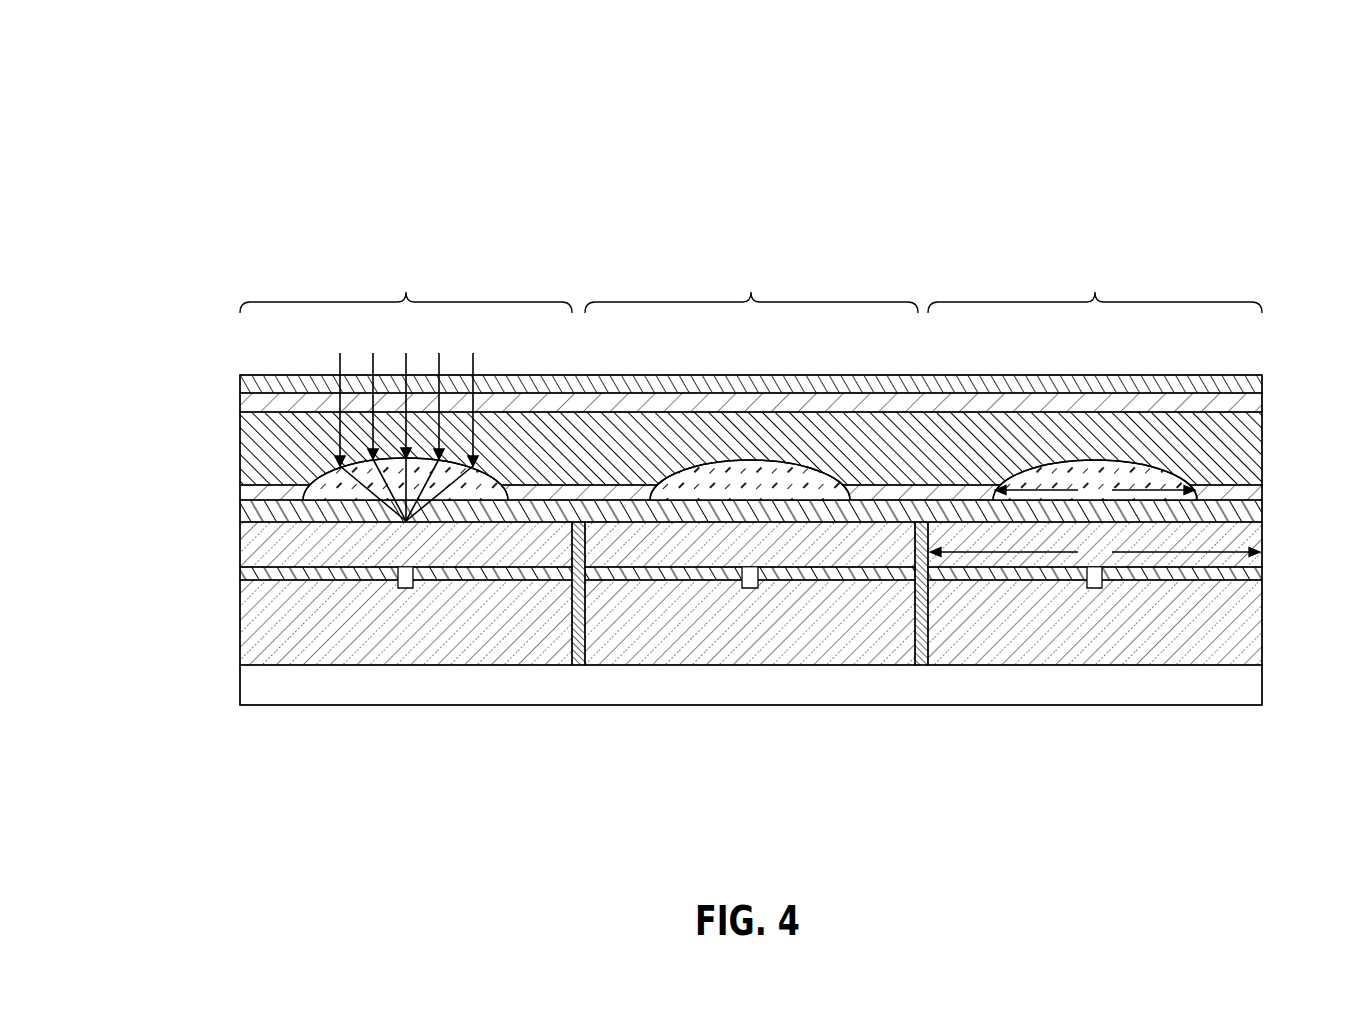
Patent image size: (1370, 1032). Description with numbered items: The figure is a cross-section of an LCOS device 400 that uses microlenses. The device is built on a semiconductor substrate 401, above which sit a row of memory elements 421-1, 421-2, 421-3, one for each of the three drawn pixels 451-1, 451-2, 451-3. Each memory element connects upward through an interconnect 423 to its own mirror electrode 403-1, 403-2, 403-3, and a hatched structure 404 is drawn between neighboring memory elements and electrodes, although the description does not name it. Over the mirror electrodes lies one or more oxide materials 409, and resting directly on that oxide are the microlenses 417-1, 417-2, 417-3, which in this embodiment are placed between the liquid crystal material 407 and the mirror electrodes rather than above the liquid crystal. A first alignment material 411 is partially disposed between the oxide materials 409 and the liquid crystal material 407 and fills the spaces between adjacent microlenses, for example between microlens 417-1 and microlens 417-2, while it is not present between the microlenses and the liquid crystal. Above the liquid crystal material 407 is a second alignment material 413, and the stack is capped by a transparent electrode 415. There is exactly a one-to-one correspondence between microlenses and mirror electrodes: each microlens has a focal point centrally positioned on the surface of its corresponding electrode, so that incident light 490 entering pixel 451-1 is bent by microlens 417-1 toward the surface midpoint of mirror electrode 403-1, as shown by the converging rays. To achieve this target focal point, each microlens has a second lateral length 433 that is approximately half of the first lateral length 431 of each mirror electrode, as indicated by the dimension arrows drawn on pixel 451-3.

The LCOS device 400 is at (132, 34).
The transparent electrode 415 is at (240, 380).
The second alignment material 413 is at (240, 400).
The liquid crystal material 407 is at (751, 448).
The first alignment material 411 is at (240, 487).
The one or more oxide materials 409 is at (240, 512).
The mirror electrode 403-1 is at (240, 537).
The mirror electrode 403-2 is at (750, 544).
The mirror electrode 403-3 is at (1262, 535).
The memory element 421-1 is at (240, 618).
The memory element 421-2 is at (750, 622).
The memory element 421-3 is at (1262, 620).
The semiconductor substrate 401 is at (751, 685).
The isolation structure 404 is at (577, 636).
The interconnect 423 is at (1091, 592).
The microlens 417-1 is at (307, 471).
The microlens 417-2 is at (750, 480).
The microlens 417-3 is at (1172, 471).
The second lateral length 433 is at (1095, 490).
The first lateral length 431 is at (1095, 552).
The incident light 490 is at (406, 427).
The pixel 451-1 is at (406, 290).
The pixel 451-2 is at (751, 290).
The pixel 451-3 is at (1095, 290).